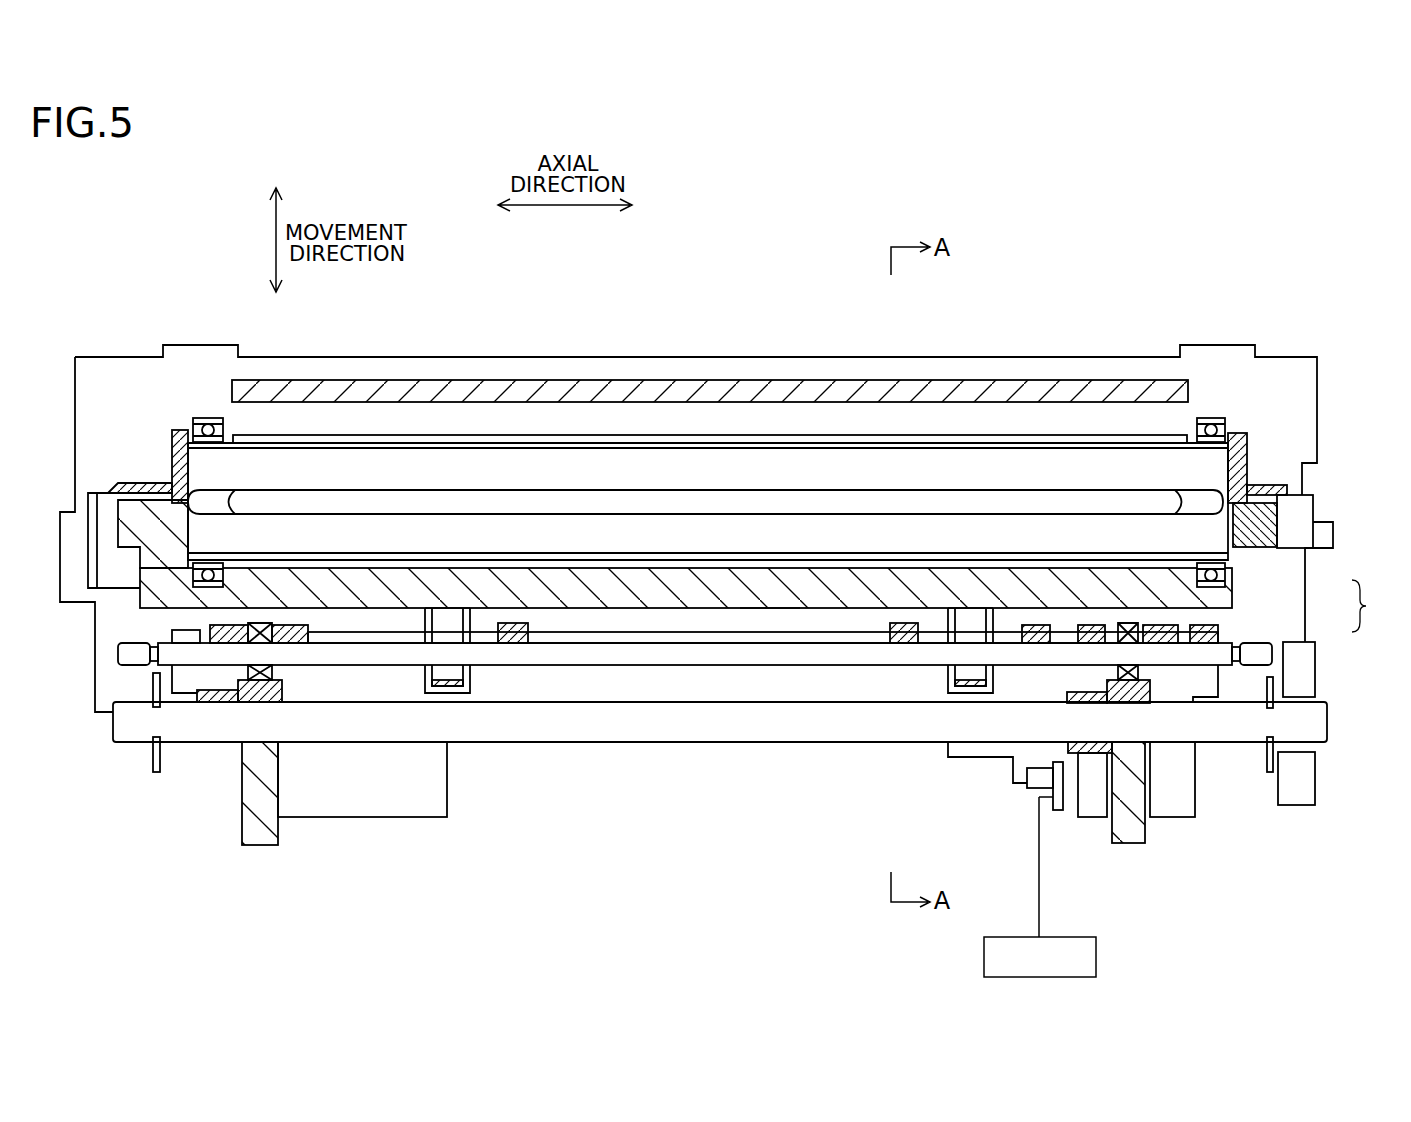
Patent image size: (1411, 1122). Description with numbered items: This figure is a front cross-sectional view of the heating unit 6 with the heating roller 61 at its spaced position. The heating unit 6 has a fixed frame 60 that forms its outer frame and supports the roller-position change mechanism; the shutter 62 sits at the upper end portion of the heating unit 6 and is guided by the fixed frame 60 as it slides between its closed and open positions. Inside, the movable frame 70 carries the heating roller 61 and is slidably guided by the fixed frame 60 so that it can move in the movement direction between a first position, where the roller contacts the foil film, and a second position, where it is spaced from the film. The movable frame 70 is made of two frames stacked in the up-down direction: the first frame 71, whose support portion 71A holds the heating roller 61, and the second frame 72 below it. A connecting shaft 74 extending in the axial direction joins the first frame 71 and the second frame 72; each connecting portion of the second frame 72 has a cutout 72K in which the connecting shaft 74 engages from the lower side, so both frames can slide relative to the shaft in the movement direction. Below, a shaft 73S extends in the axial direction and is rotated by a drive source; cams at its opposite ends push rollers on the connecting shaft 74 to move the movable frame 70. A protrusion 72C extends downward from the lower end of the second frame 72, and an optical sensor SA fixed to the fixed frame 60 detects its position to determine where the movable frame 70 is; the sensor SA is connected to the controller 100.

The heating unit 6 is at (1124, 233).
The fixed frame 60 is at (1288, 346).
The heating roller 61 is at (415, 440).
The shutter 62 is at (628, 388).
The movable frame 70 is at (1377, 606).
The first frame 71 is at (1232, 599).
The support portion 71A is at (775, 585).
The second frame 72 is at (1220, 632).
The protrusion 72C is at (1013, 770).
The cutout 72K is at (513, 653).
The shaft 73S is at (813, 745).
The connecting shaft 74 is at (627, 655).
The sensor SA is at (1040, 785).
The controller 100 is at (1070, 935).